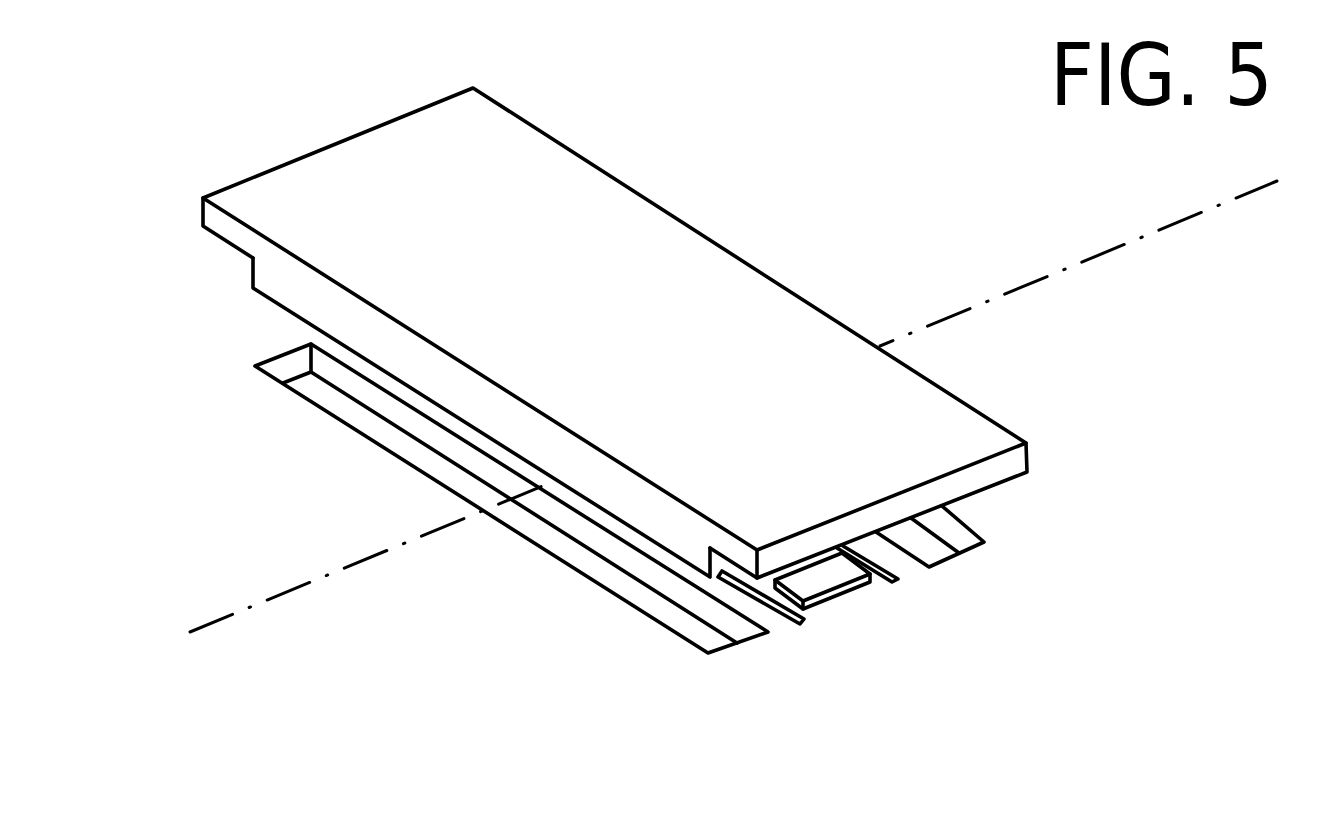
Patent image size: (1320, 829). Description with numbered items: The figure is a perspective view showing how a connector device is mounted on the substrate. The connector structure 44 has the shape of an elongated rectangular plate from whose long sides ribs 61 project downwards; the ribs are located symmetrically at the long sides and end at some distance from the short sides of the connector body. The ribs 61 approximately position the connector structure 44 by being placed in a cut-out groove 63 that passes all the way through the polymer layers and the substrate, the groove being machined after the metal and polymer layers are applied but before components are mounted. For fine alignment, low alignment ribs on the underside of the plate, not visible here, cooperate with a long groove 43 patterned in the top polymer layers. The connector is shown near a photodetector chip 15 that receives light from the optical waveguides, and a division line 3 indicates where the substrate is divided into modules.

The division line 3 is at (372, 558).
The photodetector chip 15 is at (850, 586).
The groove 43 is at (798, 621).
The connector structure 44 is at (763, 290).
The rib 61 is at (288, 300).
The cut-out groove 63 is at (708, 655).